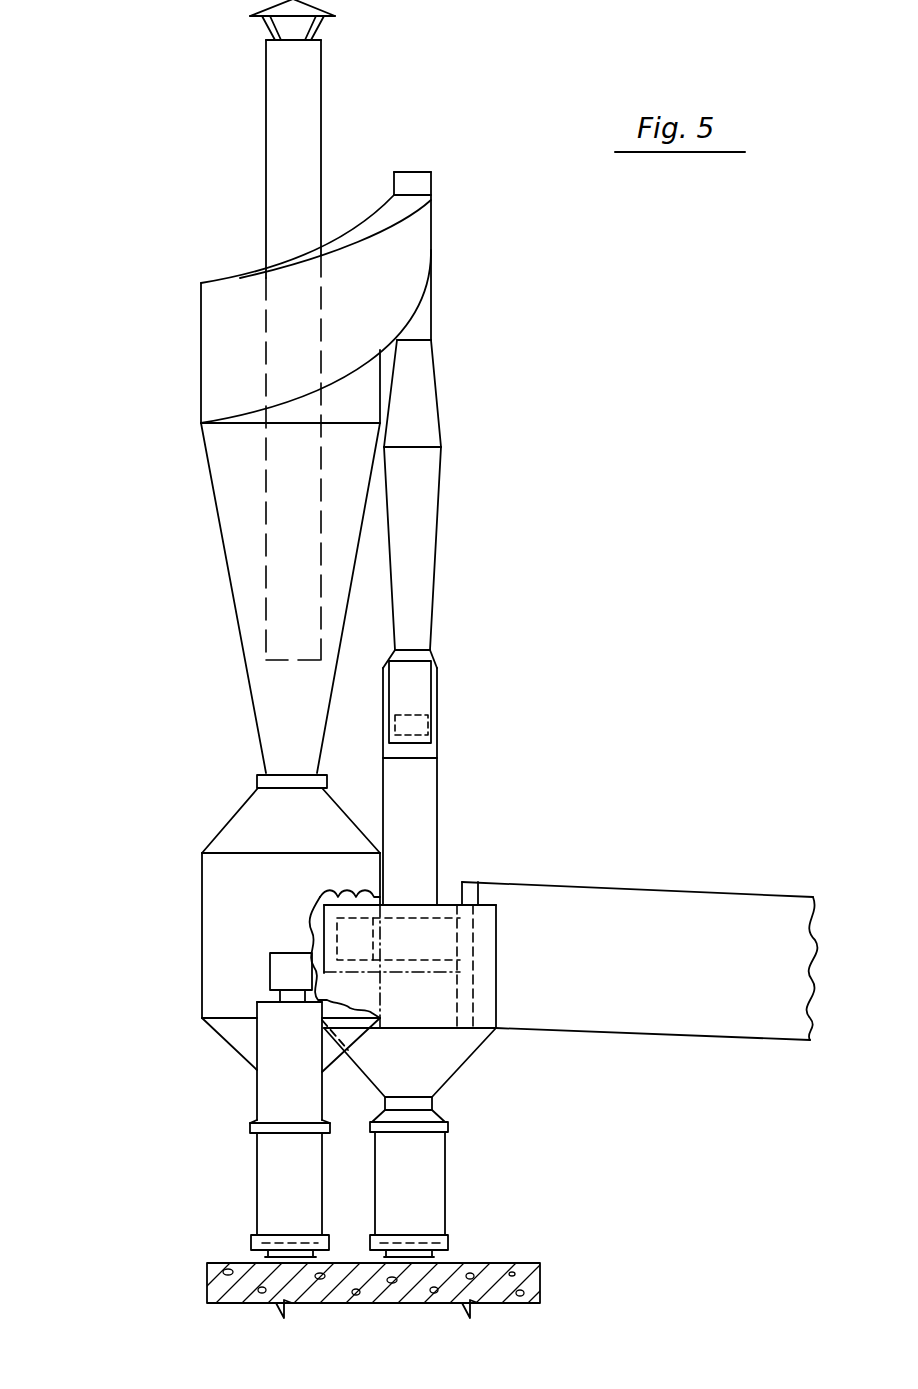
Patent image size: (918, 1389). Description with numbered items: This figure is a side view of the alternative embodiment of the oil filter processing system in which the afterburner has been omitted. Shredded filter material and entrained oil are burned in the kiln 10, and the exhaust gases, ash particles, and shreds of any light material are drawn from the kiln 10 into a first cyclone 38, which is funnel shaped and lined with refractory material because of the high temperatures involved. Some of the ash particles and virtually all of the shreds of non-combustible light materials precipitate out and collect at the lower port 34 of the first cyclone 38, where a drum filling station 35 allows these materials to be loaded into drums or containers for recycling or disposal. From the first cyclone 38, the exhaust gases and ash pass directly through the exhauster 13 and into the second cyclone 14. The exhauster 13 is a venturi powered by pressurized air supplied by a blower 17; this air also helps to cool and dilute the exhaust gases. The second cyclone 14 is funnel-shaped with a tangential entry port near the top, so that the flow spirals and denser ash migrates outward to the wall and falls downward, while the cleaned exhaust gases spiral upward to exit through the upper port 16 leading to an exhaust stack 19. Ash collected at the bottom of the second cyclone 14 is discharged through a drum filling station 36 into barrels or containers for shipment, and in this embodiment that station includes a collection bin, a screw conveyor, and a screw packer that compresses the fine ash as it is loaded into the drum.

The kiln 10 is at (662, 907).
The exhauster 13 is at (430, 652).
The second cyclone 14 is at (225, 393).
The upper port 16 is at (286, 628).
The blower 17 is at (425, 697).
The exhaust stack 19 is at (310, 100).
The lower port 34 is at (407, 1100).
The drum filling station 35 is at (427, 1193).
The drum filling station 36 is at (228, 1090).
The first cyclone 38 is at (353, 940).